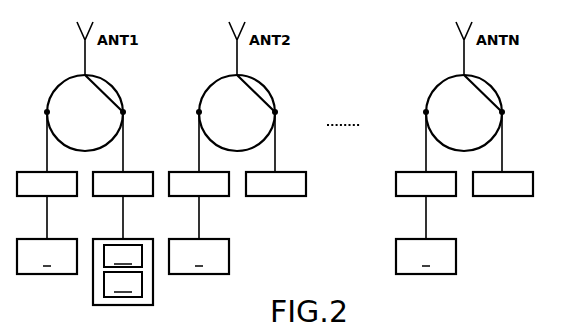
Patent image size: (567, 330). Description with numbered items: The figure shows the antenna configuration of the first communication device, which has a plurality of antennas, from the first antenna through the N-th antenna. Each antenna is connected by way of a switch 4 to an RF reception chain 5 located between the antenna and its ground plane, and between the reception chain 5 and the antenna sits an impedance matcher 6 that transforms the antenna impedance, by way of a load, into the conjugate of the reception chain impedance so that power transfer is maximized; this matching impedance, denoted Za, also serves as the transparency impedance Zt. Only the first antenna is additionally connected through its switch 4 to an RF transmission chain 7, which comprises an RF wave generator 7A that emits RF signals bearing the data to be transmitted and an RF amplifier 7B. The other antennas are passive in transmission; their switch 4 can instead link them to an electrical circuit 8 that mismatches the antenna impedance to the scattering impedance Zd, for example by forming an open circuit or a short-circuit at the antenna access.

The switch 4 is at (59, 83).
The RF reception chain 5 is at (236, 256).
The impedance matcher 6 is at (97, 197).
The RF transmission chain 7 is at (106, 276).
The RF wave generator 7A is at (123, 256).
The RF amplifier 7B is at (123, 284).
The electrical circuit 8 is at (293, 197).